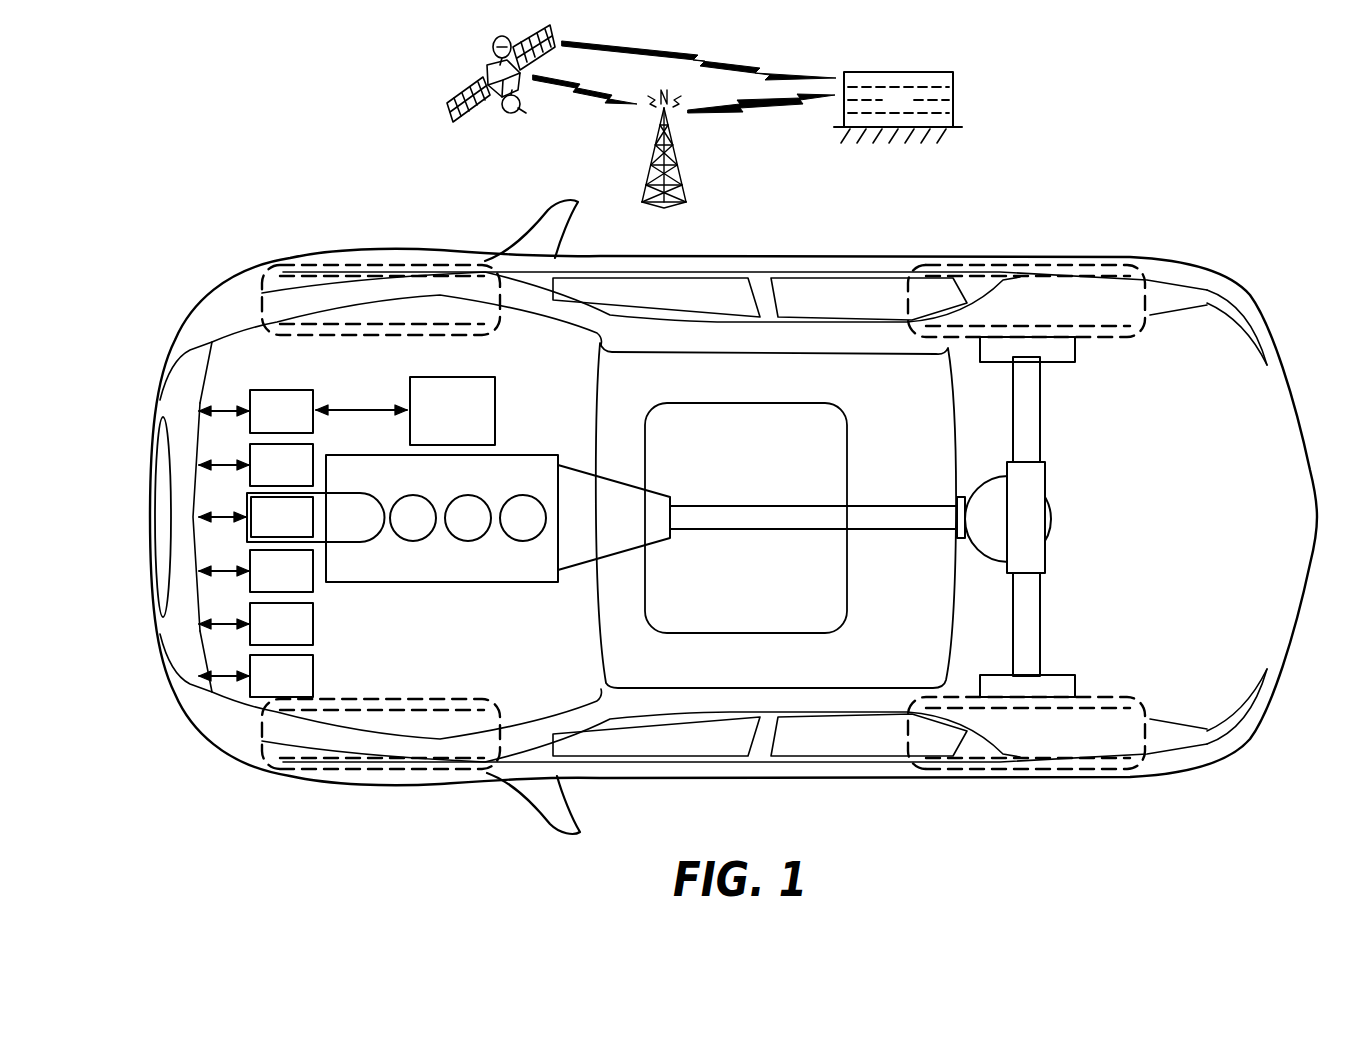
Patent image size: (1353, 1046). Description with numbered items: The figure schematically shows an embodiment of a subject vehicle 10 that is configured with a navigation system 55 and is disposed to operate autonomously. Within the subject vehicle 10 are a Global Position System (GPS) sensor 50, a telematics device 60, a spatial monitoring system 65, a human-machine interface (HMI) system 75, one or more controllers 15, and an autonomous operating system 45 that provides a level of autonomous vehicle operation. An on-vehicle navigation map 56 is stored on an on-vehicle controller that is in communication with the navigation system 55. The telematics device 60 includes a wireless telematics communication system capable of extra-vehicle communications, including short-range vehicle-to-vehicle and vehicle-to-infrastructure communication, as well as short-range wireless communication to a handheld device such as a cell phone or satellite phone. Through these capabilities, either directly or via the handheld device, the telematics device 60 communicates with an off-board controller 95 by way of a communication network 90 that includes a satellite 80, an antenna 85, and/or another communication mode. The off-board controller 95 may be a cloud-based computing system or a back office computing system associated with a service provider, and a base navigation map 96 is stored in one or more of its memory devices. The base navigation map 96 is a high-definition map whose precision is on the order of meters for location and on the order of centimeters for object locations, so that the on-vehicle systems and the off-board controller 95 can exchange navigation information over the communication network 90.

The subject vehicle 10 is at (186, 258).
The controller 15 is at (467, 424).
The autonomous operating system 45 is at (296, 425).
The Global Position System (GPS) sensor 50 is at (296, 479).
The navigation system 55 is at (296, 531).
The on-vehicle navigation map 56 is at (352, 531).
The telematics device 60 is at (296, 585).
The spatial monitoring system 65 is at (296, 638).
The human-machine interface (HMI) system 75 is at (296, 690).
The satellite 80 is at (520, 85).
The antenna 85 is at (675, 148).
The communication network 90 is at (687, 80).
The off-board controller 95 is at (942, 95).
The base navigation map 96 is at (898, 101).